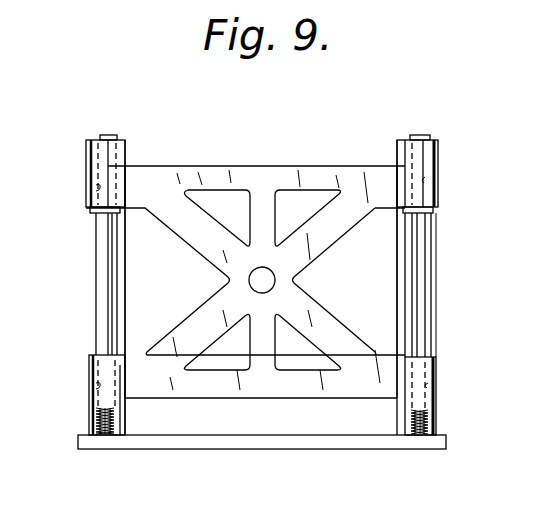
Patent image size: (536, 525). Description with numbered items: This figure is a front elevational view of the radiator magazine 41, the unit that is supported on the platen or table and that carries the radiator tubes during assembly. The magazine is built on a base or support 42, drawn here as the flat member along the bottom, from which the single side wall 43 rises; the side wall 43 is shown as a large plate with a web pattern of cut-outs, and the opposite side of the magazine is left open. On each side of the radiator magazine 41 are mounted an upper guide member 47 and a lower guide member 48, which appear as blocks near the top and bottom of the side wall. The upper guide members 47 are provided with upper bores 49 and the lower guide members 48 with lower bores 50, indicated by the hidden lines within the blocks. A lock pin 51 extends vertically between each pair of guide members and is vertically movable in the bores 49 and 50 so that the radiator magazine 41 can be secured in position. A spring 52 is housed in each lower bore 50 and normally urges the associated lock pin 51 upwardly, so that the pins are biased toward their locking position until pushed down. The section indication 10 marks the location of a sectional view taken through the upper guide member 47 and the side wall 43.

The section line 10- 10 is at (138, 229).
The radiator magazine 41 is at (440, 259).
The base or support 42 is at (312, 449).
The side wall 43 is at (298, 166).
The upper guide member 47 is at (86, 160).
The lower guide member 48 is at (89, 367).
The upper bore 49 is at (96, 190).
The lower bore 50 is at (95, 385).
The lock pin 51 is at (97, 281).
The spring 52 is at (94, 436).